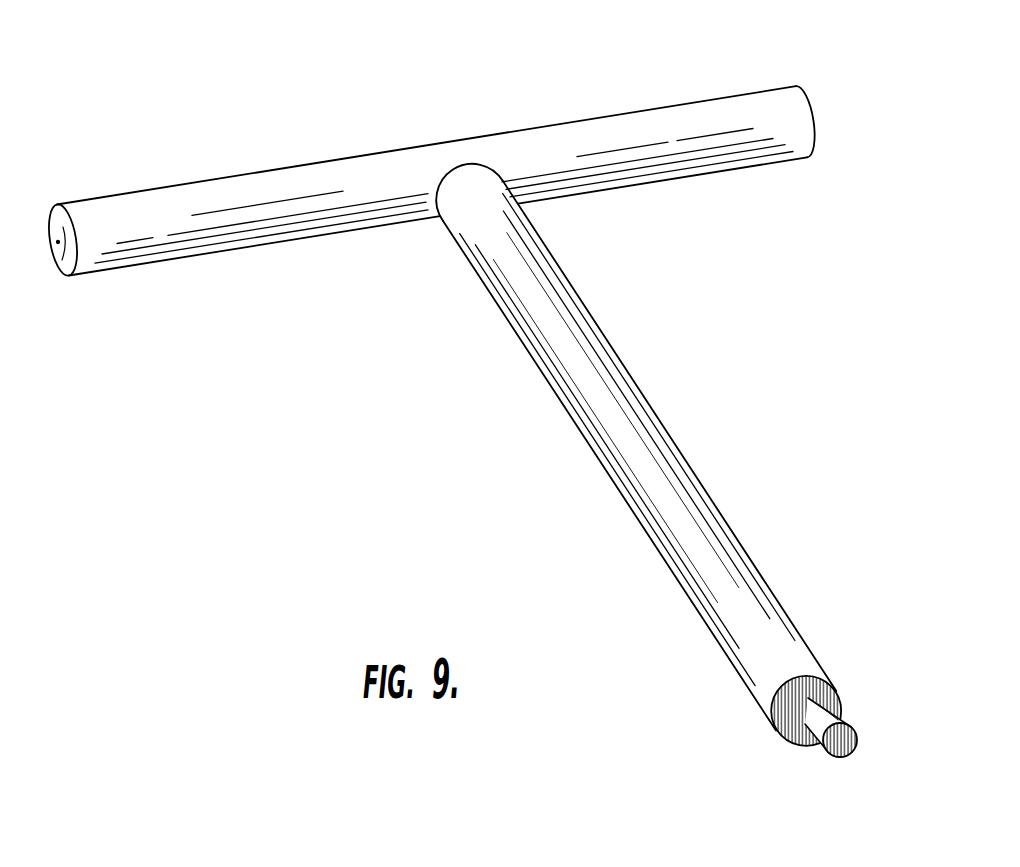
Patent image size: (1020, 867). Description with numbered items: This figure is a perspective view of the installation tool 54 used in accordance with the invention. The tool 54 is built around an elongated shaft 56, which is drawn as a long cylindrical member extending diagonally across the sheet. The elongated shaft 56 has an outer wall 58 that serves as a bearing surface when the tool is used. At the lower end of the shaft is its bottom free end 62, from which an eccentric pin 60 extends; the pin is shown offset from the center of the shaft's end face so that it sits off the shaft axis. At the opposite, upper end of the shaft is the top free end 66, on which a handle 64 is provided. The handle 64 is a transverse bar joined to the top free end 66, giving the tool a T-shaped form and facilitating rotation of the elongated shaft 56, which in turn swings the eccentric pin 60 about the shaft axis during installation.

The tool 54 is at (486, 418).
The elongated shaft 56 is at (654, 487).
The outer wall 58 is at (743, 547).
The eccentric pin 60 is at (857, 739).
The bottom free end 62 is at (790, 716).
The handle 64 is at (645, 123).
The top free end 66 is at (457, 185).